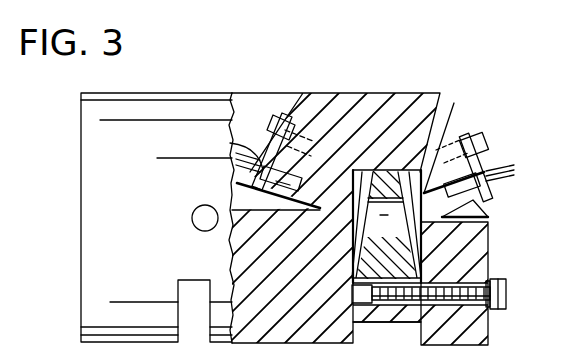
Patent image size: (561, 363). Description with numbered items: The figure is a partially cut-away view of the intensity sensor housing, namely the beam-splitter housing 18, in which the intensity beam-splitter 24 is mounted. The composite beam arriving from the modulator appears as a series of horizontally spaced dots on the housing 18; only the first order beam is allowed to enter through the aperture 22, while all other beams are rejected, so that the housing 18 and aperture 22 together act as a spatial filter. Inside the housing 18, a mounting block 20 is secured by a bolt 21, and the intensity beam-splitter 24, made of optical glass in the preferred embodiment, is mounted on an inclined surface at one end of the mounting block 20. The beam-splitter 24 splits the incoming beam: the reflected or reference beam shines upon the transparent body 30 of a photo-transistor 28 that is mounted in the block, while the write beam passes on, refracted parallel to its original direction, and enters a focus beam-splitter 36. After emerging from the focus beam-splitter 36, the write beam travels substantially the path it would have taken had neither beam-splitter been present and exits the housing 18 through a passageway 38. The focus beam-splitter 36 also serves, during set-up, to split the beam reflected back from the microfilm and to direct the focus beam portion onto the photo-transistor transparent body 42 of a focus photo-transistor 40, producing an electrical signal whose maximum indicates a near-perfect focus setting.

The beam-splitter housing 18 is at (98, 142).
The mounting block 20 is at (388, 324).
The bolt 21 is at (508, 295).
The aperture 22 is at (480, 222).
The intensity beam-splitter 24 is at (449, 112).
The photo-transistor 28 is at (487, 168).
The transparent body 30 is at (492, 207).
The focus beam-splitter 36 is at (358, 170).
The passageway 38 is at (233, 212).
The focus photo transistor 40 is at (230, 141).
The photo-transistor transparent body 42 is at (236, 184).